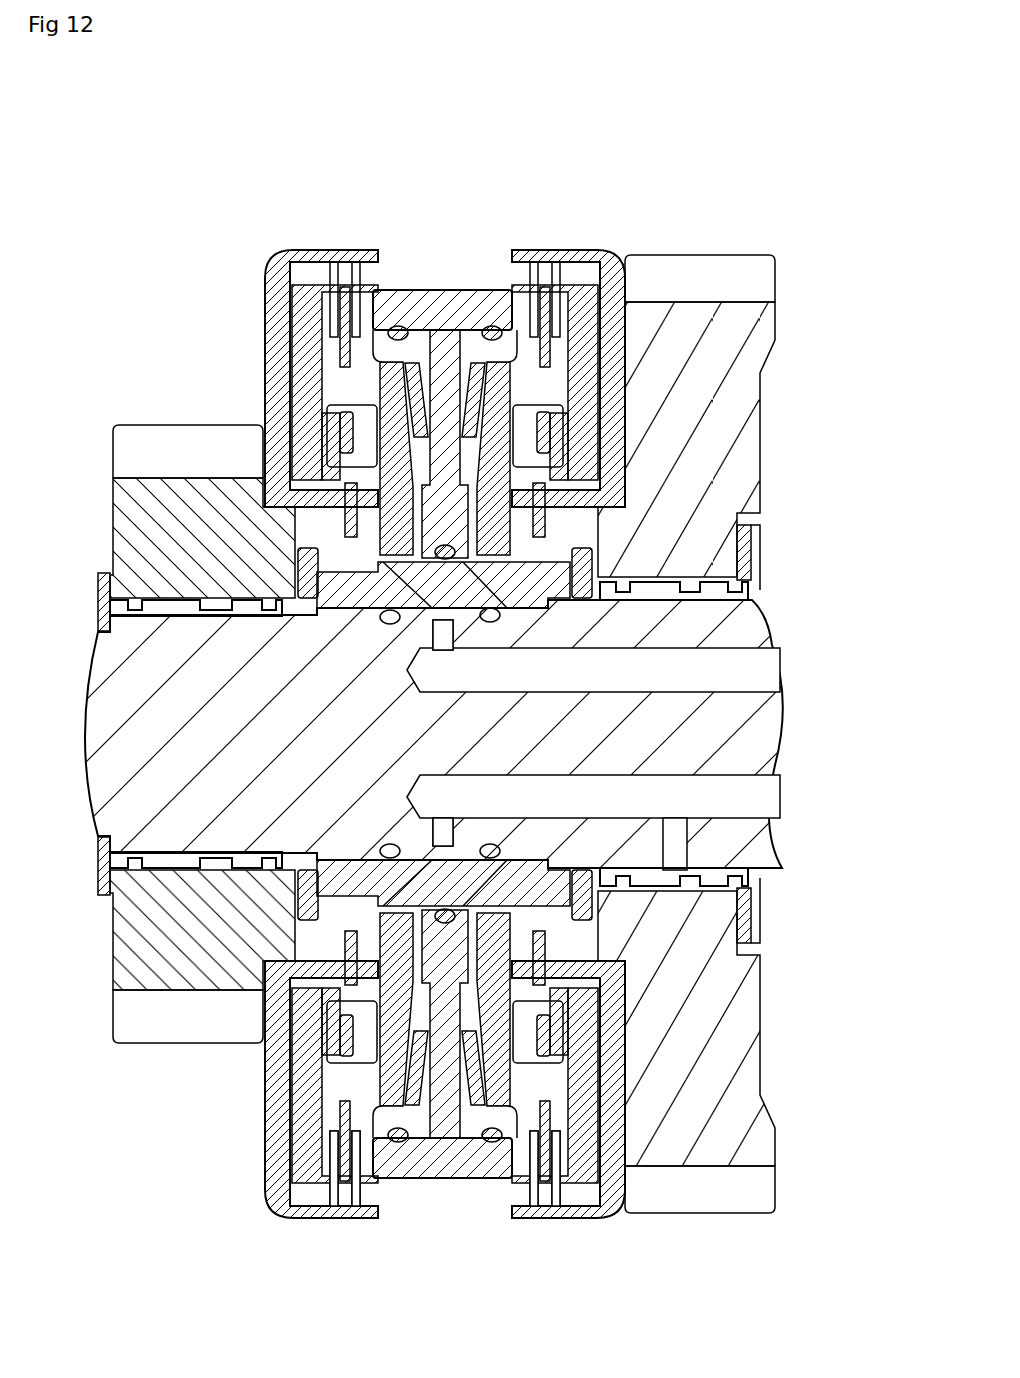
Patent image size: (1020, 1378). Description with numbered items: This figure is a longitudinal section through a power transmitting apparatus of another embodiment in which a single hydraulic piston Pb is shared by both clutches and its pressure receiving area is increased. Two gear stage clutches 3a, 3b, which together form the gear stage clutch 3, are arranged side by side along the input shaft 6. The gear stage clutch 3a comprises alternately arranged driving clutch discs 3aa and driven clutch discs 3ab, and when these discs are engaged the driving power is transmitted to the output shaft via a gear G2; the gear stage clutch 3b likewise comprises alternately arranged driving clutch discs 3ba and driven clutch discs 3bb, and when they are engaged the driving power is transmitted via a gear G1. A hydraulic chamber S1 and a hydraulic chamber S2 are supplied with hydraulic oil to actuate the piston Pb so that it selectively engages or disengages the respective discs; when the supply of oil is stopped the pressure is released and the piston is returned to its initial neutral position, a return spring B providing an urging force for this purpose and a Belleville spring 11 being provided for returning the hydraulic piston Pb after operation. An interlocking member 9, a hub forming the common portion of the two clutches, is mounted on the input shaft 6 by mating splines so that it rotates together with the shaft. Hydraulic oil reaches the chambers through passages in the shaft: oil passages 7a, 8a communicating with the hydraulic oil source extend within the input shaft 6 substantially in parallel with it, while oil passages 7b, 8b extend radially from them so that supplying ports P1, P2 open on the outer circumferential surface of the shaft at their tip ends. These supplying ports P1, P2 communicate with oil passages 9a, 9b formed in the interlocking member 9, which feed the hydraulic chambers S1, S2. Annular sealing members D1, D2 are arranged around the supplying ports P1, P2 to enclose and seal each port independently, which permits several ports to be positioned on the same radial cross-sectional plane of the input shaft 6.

The gear stage clutch 3 is at (441, 736).
The gear stage clutch 3a is at (345, 262).
The gear stage clutch 3b is at (545, 262).
The driving clutch discs 3aa is at (356, 1208).
The driven clutch discs 3ab is at (334, 1208).
The driving clutch discs 3ba is at (534, 1208).
The driven clutch discs 3bb is at (556, 1208).
The piston Pb is at (448, 290).
The gear G1 is at (740, 334).
The gear G2 is at (120, 506).
The hydraulic chamber S1 is at (355, 452).
The hydraulic chamber S2 is at (500, 462).
The input shaft 6 is at (100, 662).
The oil passage 7a is at (742, 690).
The oil passage 7b is at (432, 650).
The oil passage 8a is at (758, 810).
The oil passage 8b is at (430, 822).
The interlocking member 9 is at (600, 896).
The oil passage 9a is at (394, 624).
The oil passage 9b is at (393, 848).
The Belleville spring 11 is at (630, 1070).
The return spring B is at (358, 1030).
The supplying port P1 is at (446, 650).
The sealing member D1 is at (492, 624).
The supplying port P2 is at (446, 818).
The sealing member D2 is at (492, 843).